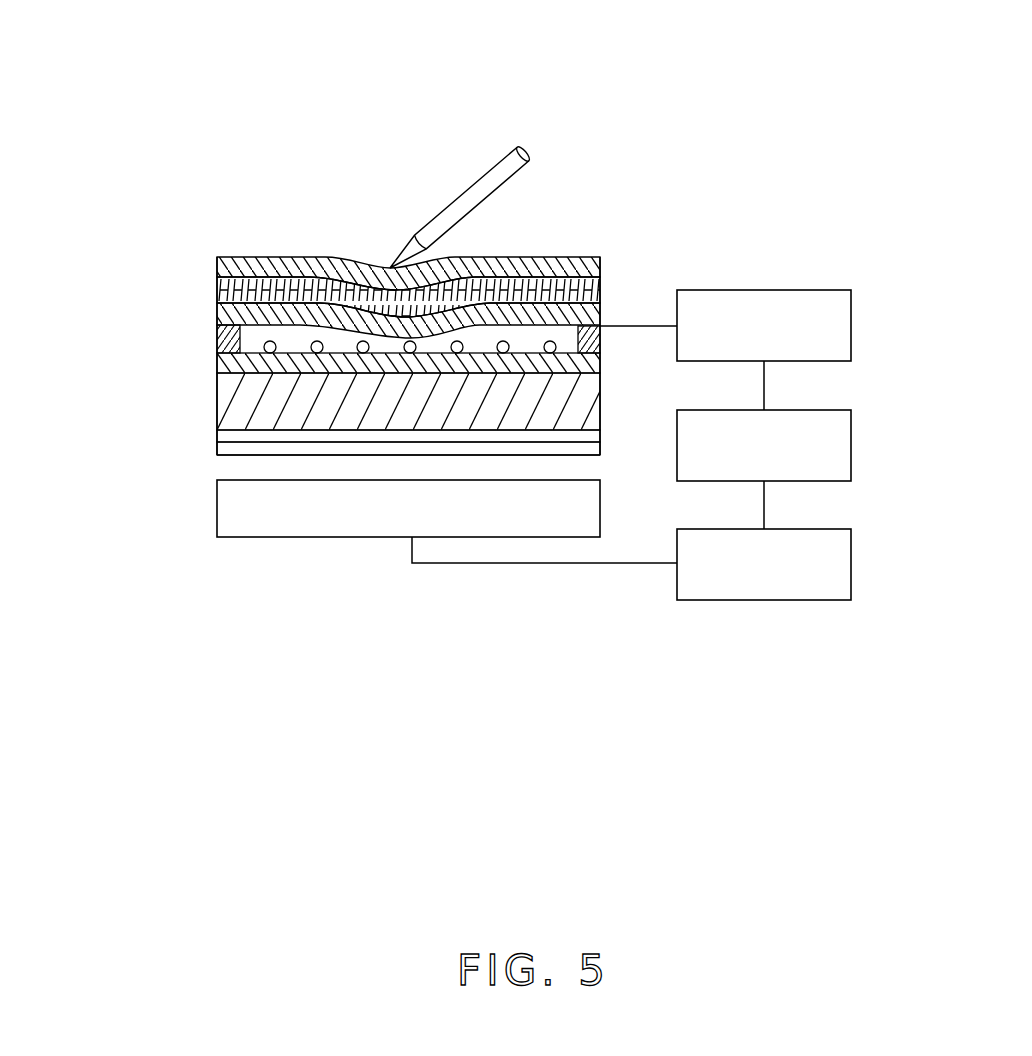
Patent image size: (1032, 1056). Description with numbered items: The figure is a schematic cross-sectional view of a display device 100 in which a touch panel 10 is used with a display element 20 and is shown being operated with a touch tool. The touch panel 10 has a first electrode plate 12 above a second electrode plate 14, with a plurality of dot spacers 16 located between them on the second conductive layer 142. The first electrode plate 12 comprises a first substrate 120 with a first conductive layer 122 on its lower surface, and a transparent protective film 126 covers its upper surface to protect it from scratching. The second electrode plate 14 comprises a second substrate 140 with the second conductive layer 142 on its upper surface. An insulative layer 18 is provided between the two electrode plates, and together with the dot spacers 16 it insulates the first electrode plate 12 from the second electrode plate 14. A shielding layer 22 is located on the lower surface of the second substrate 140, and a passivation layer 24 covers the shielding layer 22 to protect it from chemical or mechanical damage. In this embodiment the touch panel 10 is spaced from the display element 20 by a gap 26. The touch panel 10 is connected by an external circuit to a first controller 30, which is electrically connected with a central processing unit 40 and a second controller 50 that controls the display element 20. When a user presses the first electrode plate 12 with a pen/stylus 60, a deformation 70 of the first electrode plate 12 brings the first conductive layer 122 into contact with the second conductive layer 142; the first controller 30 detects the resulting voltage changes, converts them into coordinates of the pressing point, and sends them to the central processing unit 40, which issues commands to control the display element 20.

The display device 100 is at (475, 70).
The touch panel 10 is at (92, 228).
The first electrode plate 12 is at (134, 268).
The transparent protective film 126 is at (228, 259).
The first substrate 120 is at (224, 279).
The first conductive layer 122 is at (232, 320).
The second electrode plate 14 is at (133, 352).
The second conductive layer 142 is at (232, 364).
The second substrate 140 is at (232, 401).
The dot spacers 16 is at (549, 341).
The insulative layer 18 is at (600, 340).
The shielding layer 22 is at (222, 436).
The passivation layer 24 is at (222, 446).
The gap 26 is at (232, 466).
The display element 20 is at (232, 520).
The first controller 30 is at (842, 335).
The central processing unit 40 is at (842, 442).
The second controller 50 is at (842, 548).
The pen/stylus 60 is at (488, 178).
The deformation 70 is at (390, 268).